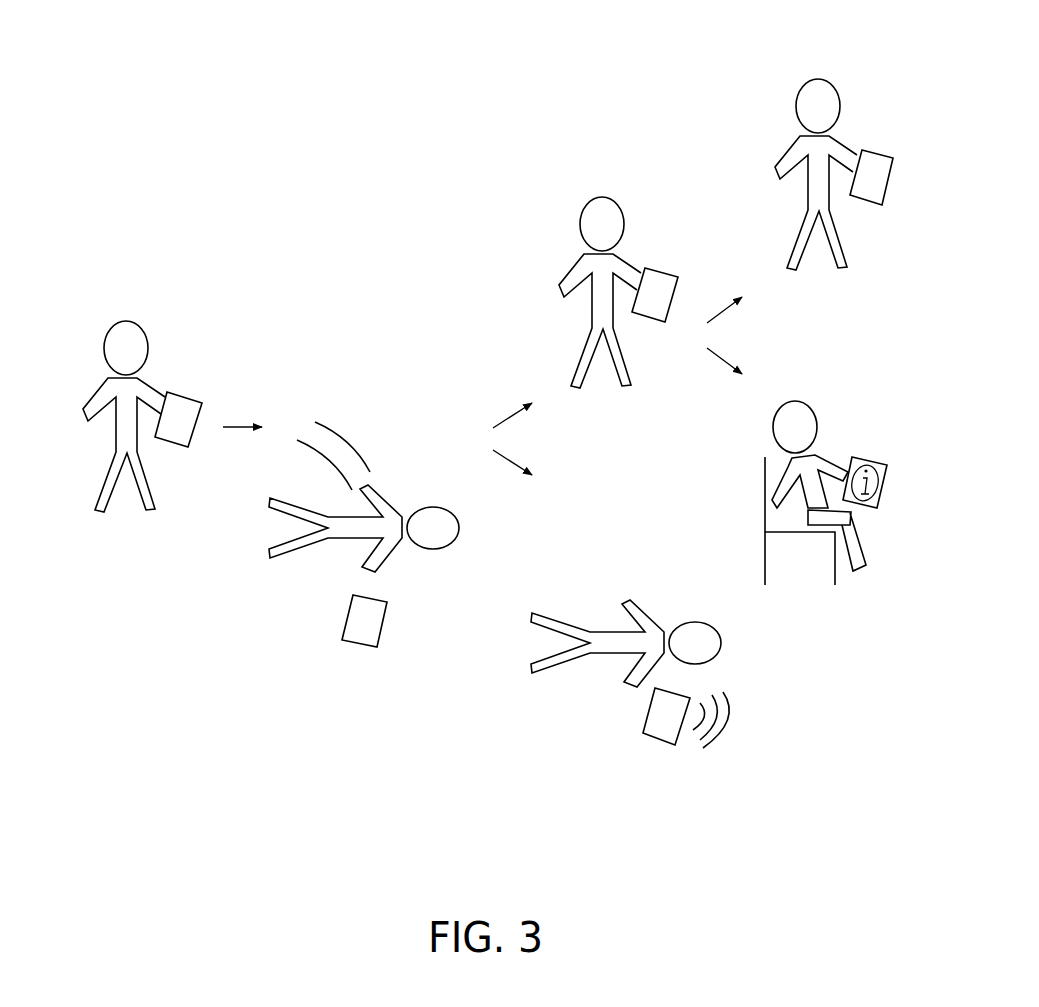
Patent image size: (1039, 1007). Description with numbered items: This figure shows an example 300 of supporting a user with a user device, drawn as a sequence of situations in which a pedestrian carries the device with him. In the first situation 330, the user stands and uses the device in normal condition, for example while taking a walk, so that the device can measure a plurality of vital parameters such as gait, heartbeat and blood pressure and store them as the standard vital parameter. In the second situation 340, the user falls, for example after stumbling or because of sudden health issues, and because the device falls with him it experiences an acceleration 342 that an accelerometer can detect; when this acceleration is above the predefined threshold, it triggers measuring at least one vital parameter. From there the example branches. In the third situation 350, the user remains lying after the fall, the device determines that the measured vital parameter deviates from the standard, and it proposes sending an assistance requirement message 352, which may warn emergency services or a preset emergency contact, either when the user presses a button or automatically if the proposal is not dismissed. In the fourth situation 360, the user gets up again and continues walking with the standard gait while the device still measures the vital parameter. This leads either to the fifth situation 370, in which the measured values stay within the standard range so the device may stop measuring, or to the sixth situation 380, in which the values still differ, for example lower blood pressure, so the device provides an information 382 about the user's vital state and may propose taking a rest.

The example 300 is at (268, 157).
The first situation 330 is at (85, 489).
The second situation 340 is at (309, 621).
The acceleration 342 is at (343, 440).
The third situation 350 is at (564, 689).
The assistance requirement message 352 is at (717, 742).
The fourth situation 360 is at (588, 193).
The fifth situation 370 is at (804, 65).
The sixth situation 380 is at (803, 592).
The information 382 is at (878, 478).